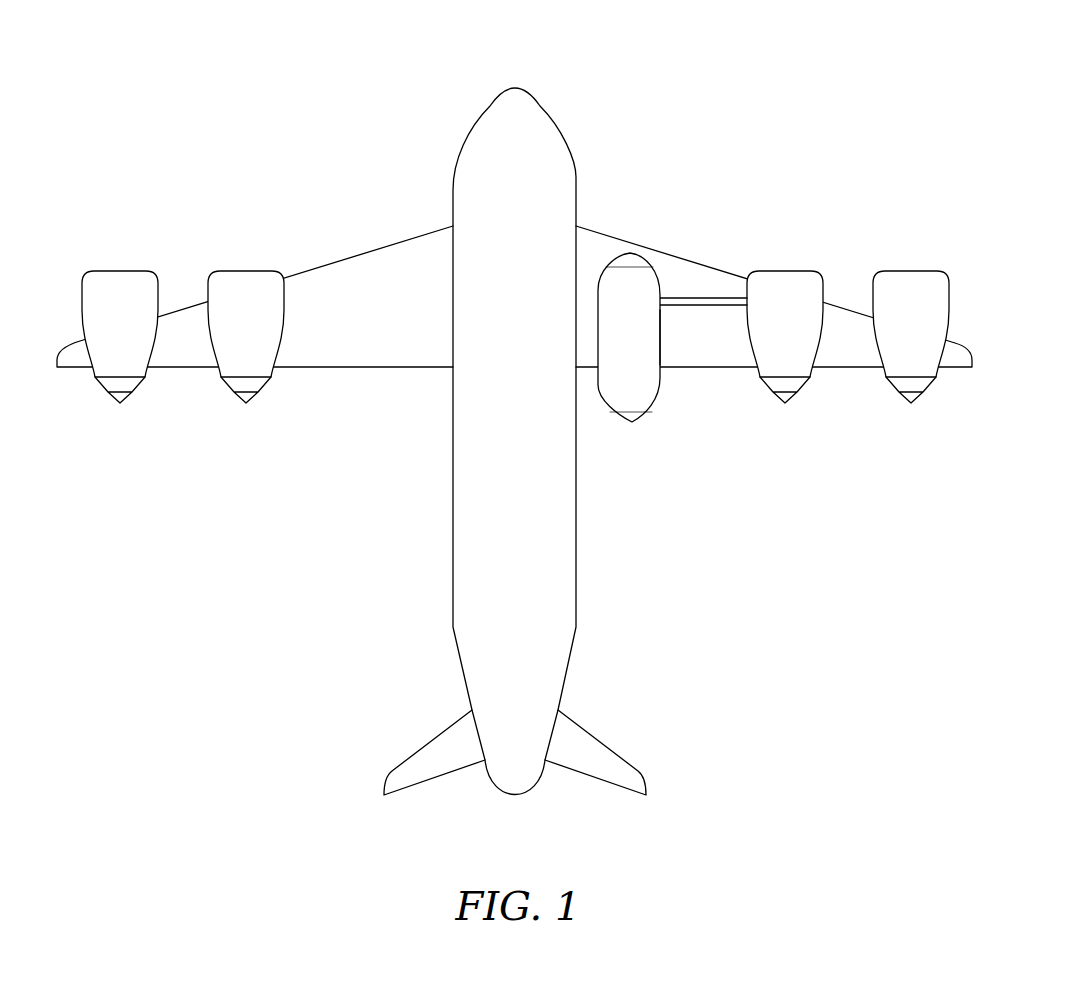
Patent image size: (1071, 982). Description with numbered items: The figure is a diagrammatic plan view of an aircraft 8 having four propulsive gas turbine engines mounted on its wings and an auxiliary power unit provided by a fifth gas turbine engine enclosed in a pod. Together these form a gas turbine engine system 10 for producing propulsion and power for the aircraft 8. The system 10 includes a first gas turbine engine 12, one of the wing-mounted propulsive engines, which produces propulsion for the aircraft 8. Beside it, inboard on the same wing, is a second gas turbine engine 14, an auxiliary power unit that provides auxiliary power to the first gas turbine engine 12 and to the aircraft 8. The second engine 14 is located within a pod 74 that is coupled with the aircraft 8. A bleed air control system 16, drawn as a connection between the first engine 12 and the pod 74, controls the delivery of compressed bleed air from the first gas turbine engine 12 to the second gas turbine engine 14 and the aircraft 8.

The aircraft 8 is at (408, 493).
The gas turbine engine system 10 is at (709, 213).
The first gas turbine engine 12 is at (785, 258).
The second gas turbine engine 14 is at (650, 326).
The bleed air control system 16 is at (697, 285).
The pod 74 is at (670, 343).